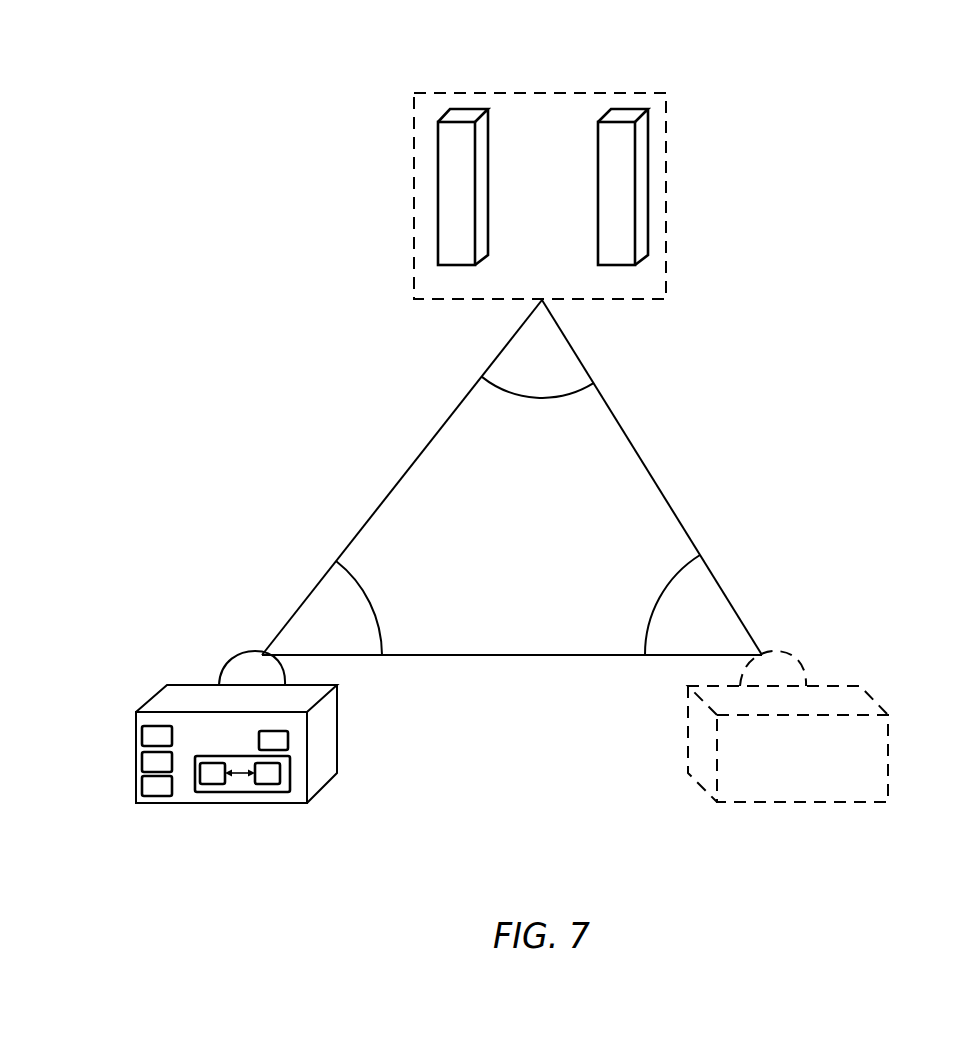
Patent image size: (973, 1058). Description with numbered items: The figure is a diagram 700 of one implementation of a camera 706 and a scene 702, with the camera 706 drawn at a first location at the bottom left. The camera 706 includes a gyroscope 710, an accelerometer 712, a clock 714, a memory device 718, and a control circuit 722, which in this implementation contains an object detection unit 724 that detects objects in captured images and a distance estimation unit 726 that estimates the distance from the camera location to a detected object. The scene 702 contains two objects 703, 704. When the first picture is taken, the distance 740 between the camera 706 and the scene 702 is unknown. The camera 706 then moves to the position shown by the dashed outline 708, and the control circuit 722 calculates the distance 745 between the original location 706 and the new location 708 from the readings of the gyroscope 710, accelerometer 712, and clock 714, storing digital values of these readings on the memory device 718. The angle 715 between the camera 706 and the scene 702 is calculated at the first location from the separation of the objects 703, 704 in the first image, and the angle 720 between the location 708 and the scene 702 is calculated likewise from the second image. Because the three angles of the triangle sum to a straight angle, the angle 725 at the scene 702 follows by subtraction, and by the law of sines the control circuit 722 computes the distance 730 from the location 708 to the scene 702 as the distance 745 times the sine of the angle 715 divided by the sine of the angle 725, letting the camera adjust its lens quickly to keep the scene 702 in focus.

The diagram 700 is at (98, 86).
The scene 702 is at (667, 172).
The object 703 is at (489, 143).
The object 704 is at (598, 209).
The camera 706 is at (147, 703).
The dashed outline 708 is at (889, 748).
The gyroscope 710 is at (142, 737).
The accelerometer 712 is at (142, 761).
The clock 714 is at (155, 801).
The angle 715 is at (381, 605).
The memory device 718 is at (293, 738).
The angle 720 is at (645, 606).
The control circuit 722 is at (292, 767).
The object detection unit 724 is at (212, 785).
The angle 725 is at (549, 398).
The distance estimation unit 726 is at (273, 785).
The distance 730 is at (654, 479).
The distance 740 is at (394, 487).
The distance 745 is at (493, 657).